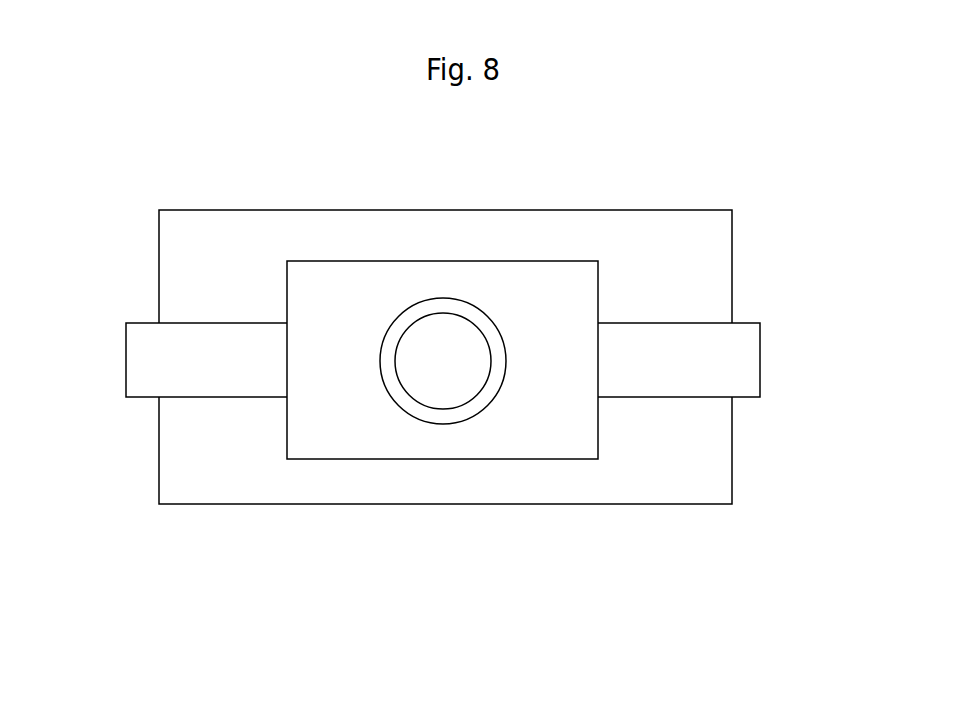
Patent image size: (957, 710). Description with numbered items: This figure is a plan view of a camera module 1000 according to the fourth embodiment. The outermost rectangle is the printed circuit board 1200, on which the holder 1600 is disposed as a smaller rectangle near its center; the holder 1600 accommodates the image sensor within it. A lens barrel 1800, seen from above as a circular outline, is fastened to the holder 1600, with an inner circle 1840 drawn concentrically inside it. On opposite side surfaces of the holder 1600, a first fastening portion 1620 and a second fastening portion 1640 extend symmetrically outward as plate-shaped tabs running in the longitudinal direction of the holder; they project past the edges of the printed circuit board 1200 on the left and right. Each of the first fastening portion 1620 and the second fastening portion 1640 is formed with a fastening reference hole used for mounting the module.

The camera module 1000 is at (745, 152).
The printed circuit board 1200 is at (717, 265).
The holder 1600 is at (542, 278).
The first fastening portion 1620 is at (138, 363).
The second fastening portion 1640 is at (745, 365).
The lens barrel 1800 is at (477, 398).
The opening 1840 is at (443, 382).